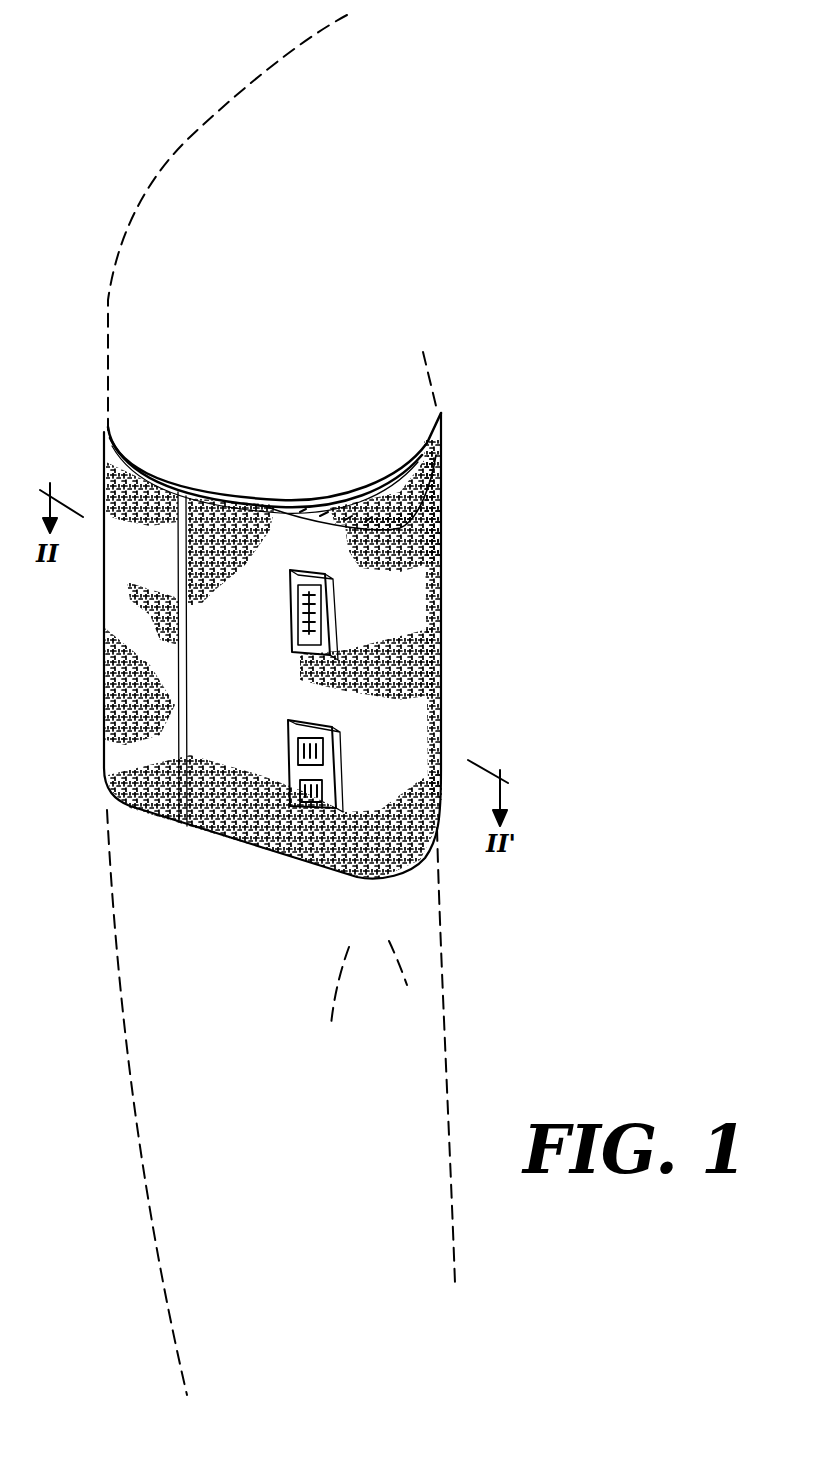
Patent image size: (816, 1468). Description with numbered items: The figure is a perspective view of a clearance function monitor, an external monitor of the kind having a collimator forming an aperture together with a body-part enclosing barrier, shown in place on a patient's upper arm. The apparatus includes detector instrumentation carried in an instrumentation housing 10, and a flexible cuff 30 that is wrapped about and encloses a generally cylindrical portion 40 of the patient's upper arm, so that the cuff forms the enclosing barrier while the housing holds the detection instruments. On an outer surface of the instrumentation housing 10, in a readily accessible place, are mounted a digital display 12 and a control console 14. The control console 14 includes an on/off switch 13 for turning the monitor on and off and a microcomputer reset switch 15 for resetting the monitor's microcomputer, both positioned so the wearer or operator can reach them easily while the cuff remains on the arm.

The instrumentation housing 10 is at (477, 466).
The digital display 12 is at (336, 612).
The on/off switch 13 is at (297, 749).
The control console 14 is at (339, 750).
The microcomputer reset switch 15 is at (300, 790).
The flexible cuff 30 is at (126, 461).
The generally cylindrical portion of the patient's upper arm 40 is at (385, 468).